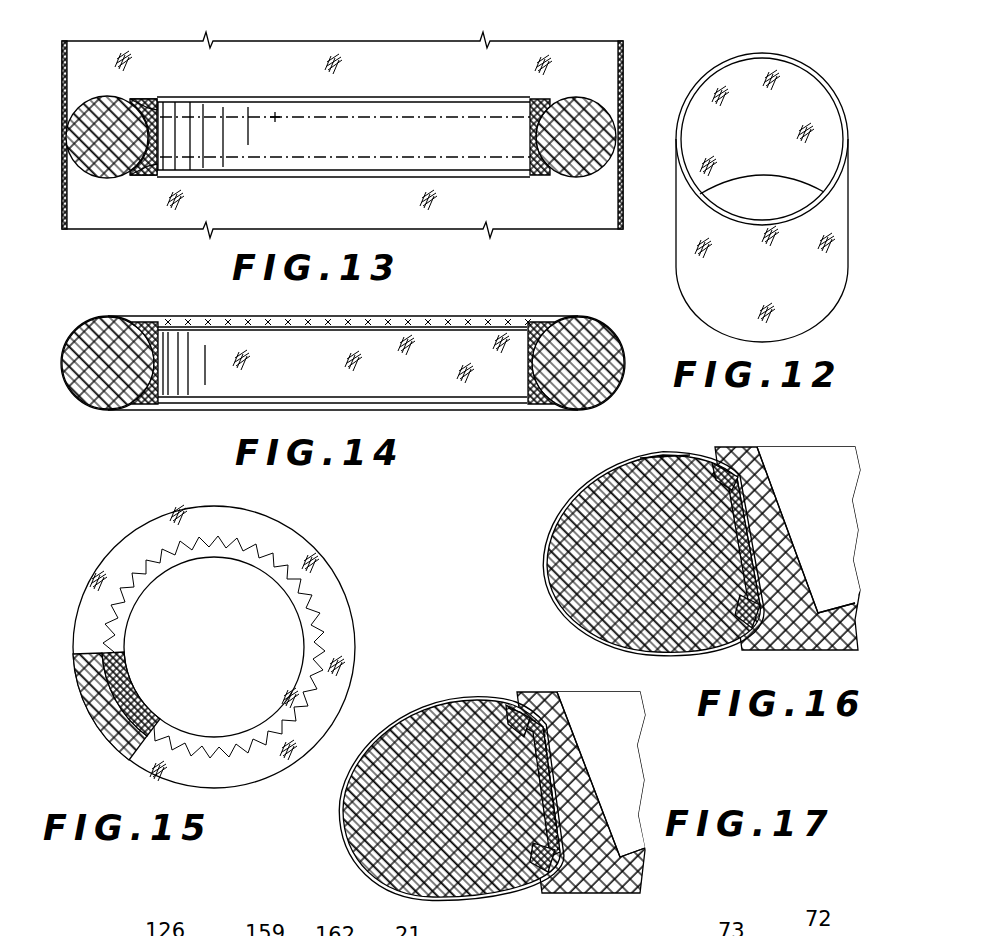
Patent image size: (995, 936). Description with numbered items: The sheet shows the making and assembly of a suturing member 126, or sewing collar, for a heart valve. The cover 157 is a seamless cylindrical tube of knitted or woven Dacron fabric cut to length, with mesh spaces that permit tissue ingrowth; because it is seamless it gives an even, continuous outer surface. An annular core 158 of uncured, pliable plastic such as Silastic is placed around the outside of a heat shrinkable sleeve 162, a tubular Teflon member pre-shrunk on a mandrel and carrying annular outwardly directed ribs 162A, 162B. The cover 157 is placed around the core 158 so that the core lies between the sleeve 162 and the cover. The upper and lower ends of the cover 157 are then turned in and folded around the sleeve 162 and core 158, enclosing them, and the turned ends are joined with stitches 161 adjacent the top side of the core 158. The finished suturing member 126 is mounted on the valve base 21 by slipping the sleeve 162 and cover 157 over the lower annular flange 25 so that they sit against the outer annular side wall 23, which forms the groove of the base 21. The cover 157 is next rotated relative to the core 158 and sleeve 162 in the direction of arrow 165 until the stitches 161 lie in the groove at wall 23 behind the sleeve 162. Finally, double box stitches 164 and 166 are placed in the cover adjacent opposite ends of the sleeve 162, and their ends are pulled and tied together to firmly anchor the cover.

In FIG. 16, the valve base 21 is at (766, 437).
In FIG. 17, the valve base 21 is at (544, 689).
In FIG. 16, the outer annular side wall 23 is at (760, 526).
In FIG. 17, the outer annular side wall 23 is at (549, 752).
In FIG. 16, the lower outwardly directed annular flange 25 is at (746, 650).
In FIG. 16, the suturing member 126 is at (566, 485).
In FIG. 13, the cover 157 is at (623, 63).
In FIG. 12, the cover 157 is at (818, 80).
In FIG. 14, the cover 157 is at (80, 330).
In FIG. 15, the cover 157 is at (308, 562).
In FIG. 16, the cover 157 is at (550, 528).
In FIG. 17, the cover 157 is at (405, 718).
In FIG. 13, the annular core 158 is at (583, 150).
In FIG. 14, the annular core 158 is at (585, 357).
In FIG. 15, the annular core 158 is at (125, 715).
In FIG. 16, the annular core 158 is at (585, 558).
In FIG. 17, the annular core 158 is at (412, 838).
In FIG. 14, the stitches 161 is at (172, 320).
In FIG. 15, the stitches 161 is at (162, 543).
In FIG. 16, the stitches 161 is at (666, 454).
In FIG. 17, the stitches 161 is at (548, 790).
In FIG. 13, the heat shrinkable sleeve 162 is at (530, 147).
In FIG. 14, the heat shrinkable sleeve 162 is at (115, 404).
In FIG. 15, the heat shrinkable sleeve 162 is at (125, 662).
In FIG. 16, the heat shrinkable sleeve 162 is at (736, 510).
In FIG. 17, the heat shrinkable sleeve 162 is at (533, 731).
In FIG. 13, the annular outwardly directed rib 162A is at (143, 100).
In FIG. 16, the annular outwardly directed rib 162A is at (722, 466).
In FIG. 17, the annular outwardly directed rib 162A is at (507, 708).
In FIG. 13, the annular outwardly directed rib 162B is at (150, 172).
In FIG. 16, the annular outwardly directed rib 162B is at (733, 632).
In FIG. 17, the annular outwardly directed rib 162B is at (532, 860).
In FIG. 17, the double box stitches 164 is at (523, 715).
In FIG. 17, the arrow 165 is at (472, 688).
In FIG. 17, the double box stitches 166 is at (557, 860).